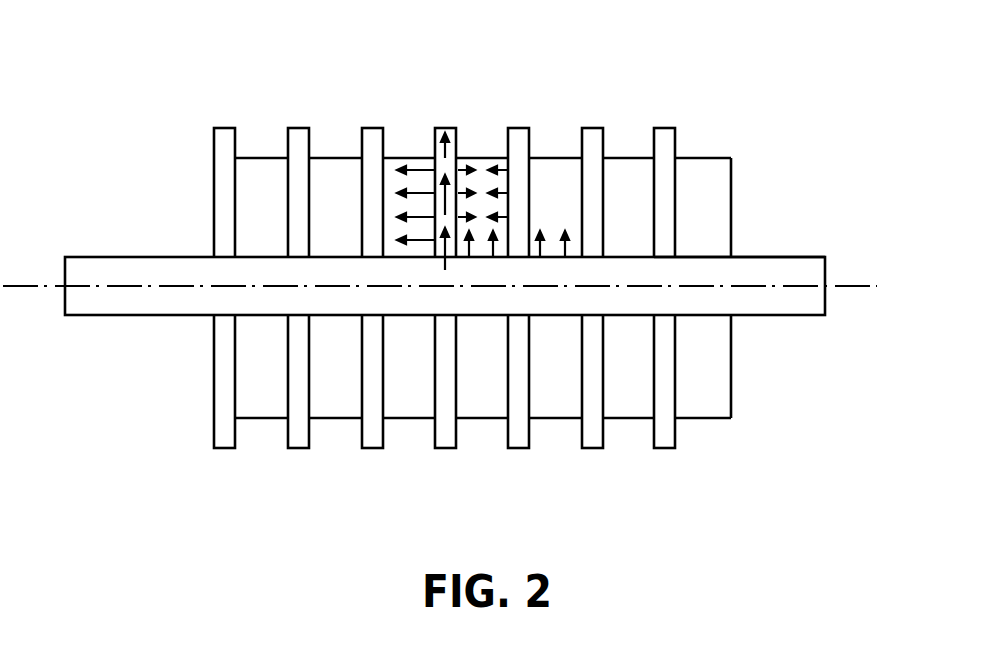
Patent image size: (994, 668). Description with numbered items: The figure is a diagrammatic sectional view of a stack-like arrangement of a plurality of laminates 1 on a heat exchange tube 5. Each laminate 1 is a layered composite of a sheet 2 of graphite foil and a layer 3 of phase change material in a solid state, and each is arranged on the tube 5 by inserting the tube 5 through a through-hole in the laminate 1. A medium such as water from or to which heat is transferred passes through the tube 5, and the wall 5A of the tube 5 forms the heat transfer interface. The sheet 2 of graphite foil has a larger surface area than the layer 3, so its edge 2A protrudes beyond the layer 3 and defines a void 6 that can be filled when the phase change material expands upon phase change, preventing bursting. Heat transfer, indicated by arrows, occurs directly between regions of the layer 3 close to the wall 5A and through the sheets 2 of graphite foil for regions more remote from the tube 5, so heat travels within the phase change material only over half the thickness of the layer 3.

The laminate 1 is at (735, 458).
The sheet of graphite foil 2 is at (673, 190).
The edge of the sheet of graphite foil 2A is at (665, 138).
The layer of phase change material 3 is at (713, 198).
The heat exchange tube 5 is at (810, 270).
The wall of the tube 5A is at (695, 257).
The void 6 is at (573, 127).